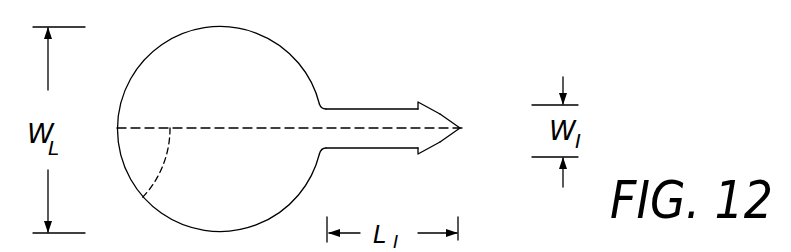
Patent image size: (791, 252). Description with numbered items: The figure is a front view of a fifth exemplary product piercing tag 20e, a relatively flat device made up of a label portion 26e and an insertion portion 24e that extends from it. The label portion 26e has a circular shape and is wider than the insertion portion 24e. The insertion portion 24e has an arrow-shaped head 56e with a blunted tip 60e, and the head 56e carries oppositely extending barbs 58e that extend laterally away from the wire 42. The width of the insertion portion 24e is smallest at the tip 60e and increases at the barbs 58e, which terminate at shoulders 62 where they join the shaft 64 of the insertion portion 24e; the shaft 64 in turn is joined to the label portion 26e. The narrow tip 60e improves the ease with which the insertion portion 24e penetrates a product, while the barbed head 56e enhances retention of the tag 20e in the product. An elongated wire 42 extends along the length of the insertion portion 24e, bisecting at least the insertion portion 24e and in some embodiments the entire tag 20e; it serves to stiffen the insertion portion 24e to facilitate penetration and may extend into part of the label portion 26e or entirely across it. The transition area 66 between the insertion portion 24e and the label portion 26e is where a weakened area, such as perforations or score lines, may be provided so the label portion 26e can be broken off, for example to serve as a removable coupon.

The tag 20e is at (457, 81).
The label portion 26e is at (145, 84).
The wire 42 is at (141, 198).
The transition area 66 is at (318, 145).
The insertion portion 24e is at (365, 142).
The shoulders 62 is at (416, 106).
The shaft 64 is at (348, 140).
The barbs 58e is at (421, 102).
The arrow-shaped head 56e is at (424, 154).
The blunted tip 60e is at (465, 128).